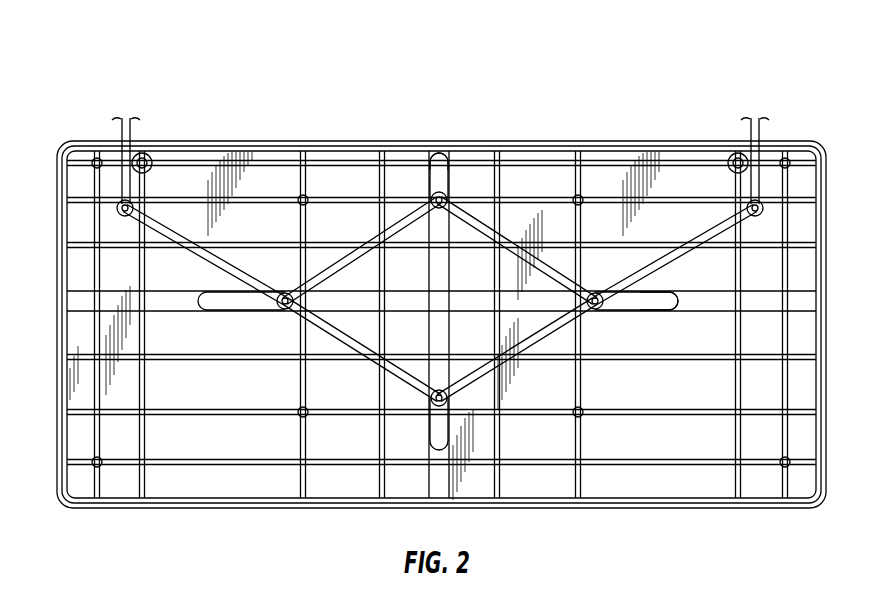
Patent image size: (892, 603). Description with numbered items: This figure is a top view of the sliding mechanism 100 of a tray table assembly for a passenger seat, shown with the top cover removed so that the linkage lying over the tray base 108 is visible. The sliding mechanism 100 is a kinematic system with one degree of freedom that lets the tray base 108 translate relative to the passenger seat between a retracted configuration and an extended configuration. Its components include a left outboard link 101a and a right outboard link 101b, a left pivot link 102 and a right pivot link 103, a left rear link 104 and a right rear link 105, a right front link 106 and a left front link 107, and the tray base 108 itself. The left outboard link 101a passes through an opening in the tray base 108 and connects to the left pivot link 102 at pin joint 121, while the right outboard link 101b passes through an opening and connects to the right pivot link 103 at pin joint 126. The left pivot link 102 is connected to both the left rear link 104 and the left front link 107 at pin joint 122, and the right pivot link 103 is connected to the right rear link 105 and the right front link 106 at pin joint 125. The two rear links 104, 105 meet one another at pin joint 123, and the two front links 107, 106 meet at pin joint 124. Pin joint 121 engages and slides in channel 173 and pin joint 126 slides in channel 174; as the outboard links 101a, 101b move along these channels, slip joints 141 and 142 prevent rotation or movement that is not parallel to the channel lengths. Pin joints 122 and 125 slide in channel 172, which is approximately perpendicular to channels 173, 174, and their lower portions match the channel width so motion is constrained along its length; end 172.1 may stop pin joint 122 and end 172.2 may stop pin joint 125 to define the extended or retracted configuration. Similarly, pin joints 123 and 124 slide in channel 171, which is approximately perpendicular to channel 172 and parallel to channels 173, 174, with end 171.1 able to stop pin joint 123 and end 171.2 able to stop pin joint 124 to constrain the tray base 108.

The sliding mechanism 100 is at (638, 93).
The left outboard link 101a is at (118, 130).
The right outboard link 101b is at (760, 133).
The left pivot link 102 is at (232, 268).
The right pivot link 103 is at (715, 228).
The left rear link 104 is at (345, 265).
The right rear link 105 is at (533, 262).
The right front link 106 is at (488, 372).
The left front link 107 is at (396, 375).
The tray base 108 is at (665, 452).
The pin joint 121 is at (124, 217).
The pin joint 122 is at (283, 310).
The pin joint 123 is at (432, 194).
The pin joint 124 is at (432, 405).
The pin joint 125 is at (595, 310).
The pin joint 126 is at (756, 217).
The slip joint 141 is at (150, 153).
The slip joint 142 is at (728, 147).
The channel 171 is at (440, 180).
The end 171.1 is at (440, 153).
The end 171.2 is at (430, 450).
The channel 172 is at (650, 305).
The end 172.1 is at (200, 305).
The end 172.2 is at (680, 298).
The channel 173 is at (122, 347).
The channel 174 is at (767, 350).